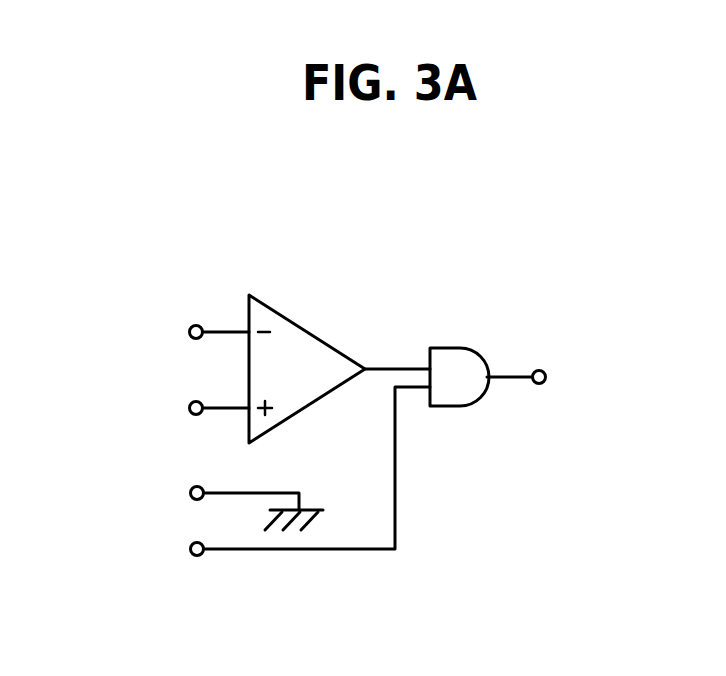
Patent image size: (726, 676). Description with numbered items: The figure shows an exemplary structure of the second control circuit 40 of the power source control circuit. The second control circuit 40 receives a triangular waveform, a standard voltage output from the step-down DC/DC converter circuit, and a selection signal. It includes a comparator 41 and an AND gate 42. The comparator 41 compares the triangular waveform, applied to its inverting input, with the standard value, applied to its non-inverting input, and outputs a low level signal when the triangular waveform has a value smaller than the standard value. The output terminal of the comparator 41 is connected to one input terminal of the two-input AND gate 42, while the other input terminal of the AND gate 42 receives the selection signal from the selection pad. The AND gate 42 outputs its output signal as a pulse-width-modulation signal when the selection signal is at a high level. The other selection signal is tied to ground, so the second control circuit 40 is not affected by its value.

The second control circuit 40 is at (542, 223).
The comparator 41 is at (312, 330).
The AND gate 42 is at (452, 406).